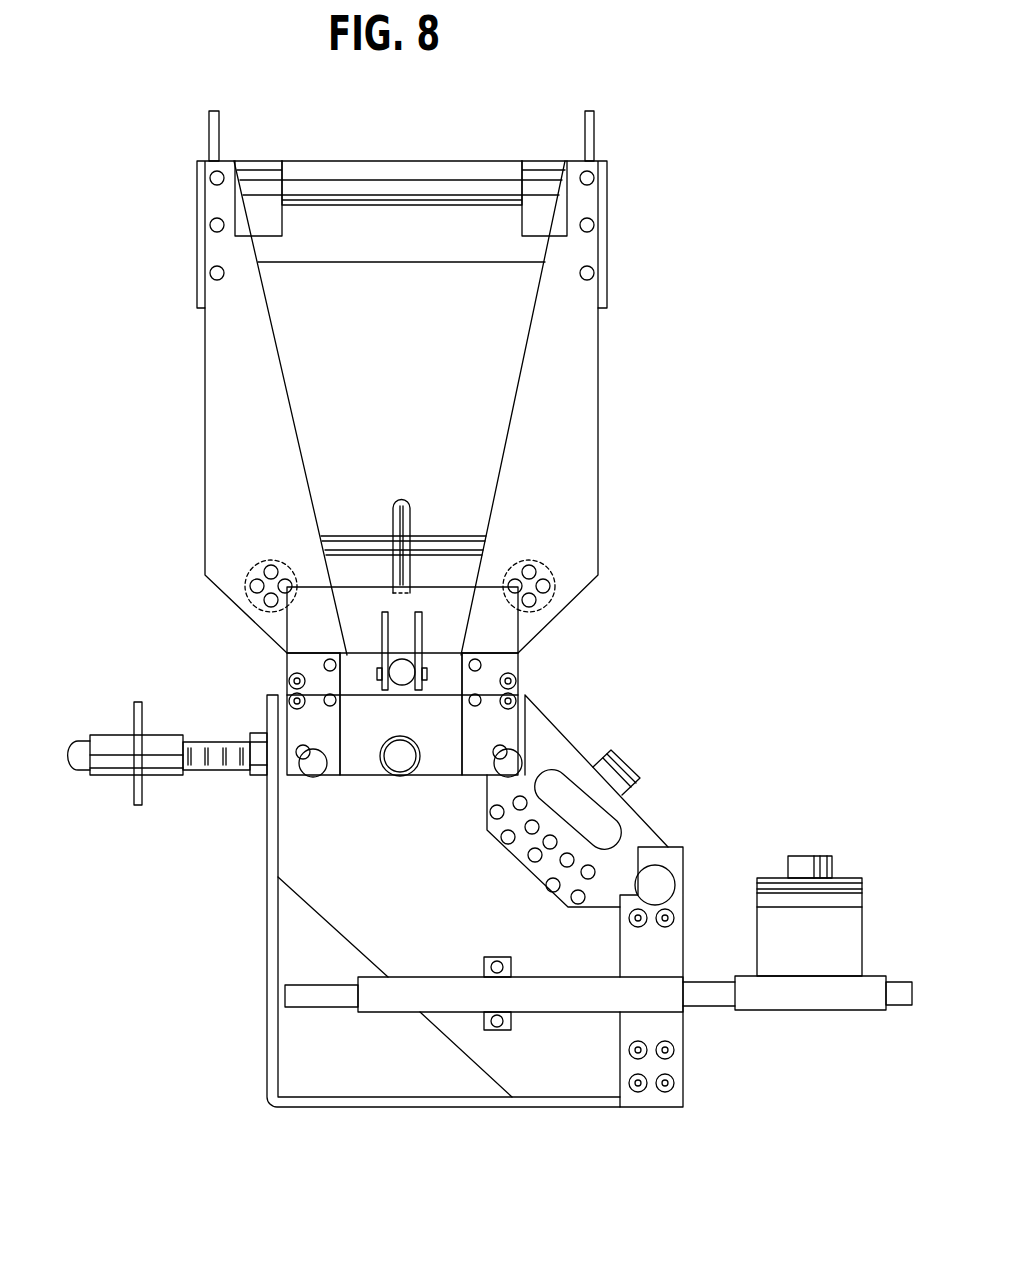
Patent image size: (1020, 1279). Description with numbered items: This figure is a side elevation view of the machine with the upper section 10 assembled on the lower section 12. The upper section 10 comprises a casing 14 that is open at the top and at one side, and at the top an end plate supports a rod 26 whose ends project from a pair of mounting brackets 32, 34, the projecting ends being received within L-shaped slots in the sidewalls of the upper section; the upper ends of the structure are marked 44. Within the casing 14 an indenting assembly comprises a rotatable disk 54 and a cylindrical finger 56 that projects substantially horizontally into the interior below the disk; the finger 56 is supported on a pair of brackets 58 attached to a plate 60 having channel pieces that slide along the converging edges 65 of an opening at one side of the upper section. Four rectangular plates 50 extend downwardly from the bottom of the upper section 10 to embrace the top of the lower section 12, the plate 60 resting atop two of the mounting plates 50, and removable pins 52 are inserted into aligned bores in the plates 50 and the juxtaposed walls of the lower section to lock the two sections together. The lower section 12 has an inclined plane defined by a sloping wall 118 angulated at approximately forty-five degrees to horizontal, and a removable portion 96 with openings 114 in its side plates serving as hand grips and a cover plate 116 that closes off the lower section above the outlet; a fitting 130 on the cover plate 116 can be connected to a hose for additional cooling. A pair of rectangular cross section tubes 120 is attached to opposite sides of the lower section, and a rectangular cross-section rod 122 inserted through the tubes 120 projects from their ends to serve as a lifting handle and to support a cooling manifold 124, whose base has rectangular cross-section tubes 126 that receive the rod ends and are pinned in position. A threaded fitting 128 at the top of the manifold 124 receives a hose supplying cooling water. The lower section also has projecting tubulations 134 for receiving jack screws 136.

The upper section 10 is at (678, 379).
The lower section 12 is at (212, 973).
The casing 14 is at (417, 393).
The rod 26 is at (377, 185).
The mounting bracket 32 is at (265, 224).
The mounting bracket 34 is at (530, 227).
The guide pin 44 is at (219, 131).
The rectangular plates 50 is at (295, 667).
The removable pins 52 is at (296, 750).
The rotatable disk 54 is at (400, 500).
The cylindrical finger 56 is at (407, 685).
The brackets 58 is at (382, 640).
The plate 60 is at (497, 627).
The converging edges 65 is at (281, 363).
The removable portion 96 is at (669, 811).
The openings 114 is at (577, 823).
The cover plate 116 is at (555, 723).
The sloping wall 118 is at (332, 925).
The rectangular cross section tubes 120 is at (542, 995).
The rectangular cross-section rods 122 is at (305, 1002).
The cooling manifold 124 is at (855, 920).
The rectangular cross-section tubes 126 is at (788, 1000).
The threaded fitting 128 is at (800, 855).
The fitting 130 is at (625, 760).
The projecting tubulations 134 is at (253, 735).
The jack screws 136 is at (227, 770).